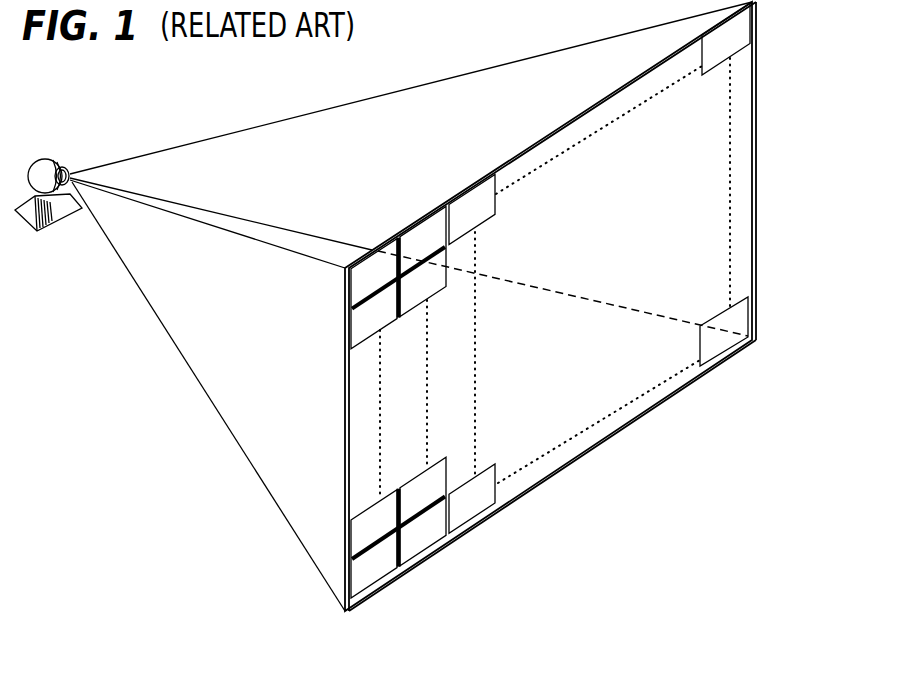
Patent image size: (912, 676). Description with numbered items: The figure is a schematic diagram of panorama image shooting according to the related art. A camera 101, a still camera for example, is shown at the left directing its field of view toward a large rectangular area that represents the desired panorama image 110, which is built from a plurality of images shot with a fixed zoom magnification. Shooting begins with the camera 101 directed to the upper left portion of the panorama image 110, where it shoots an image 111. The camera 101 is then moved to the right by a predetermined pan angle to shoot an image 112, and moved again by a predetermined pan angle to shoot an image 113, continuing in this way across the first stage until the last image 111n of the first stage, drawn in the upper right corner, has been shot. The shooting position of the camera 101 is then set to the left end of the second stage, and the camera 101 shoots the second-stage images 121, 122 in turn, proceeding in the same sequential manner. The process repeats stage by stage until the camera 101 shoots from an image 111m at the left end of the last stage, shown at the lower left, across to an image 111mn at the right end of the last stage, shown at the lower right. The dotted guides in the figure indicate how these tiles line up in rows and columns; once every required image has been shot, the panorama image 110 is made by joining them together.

The camera 101 is at (41, 157).
The panorama image 110 is at (580, 452).
The image 111 is at (370, 270).
The image 112 is at (425, 232).
The image 113 is at (472, 205).
The horizontal boundary line 121 is at (358, 330).
The image 122 is at (412, 302).
The image 111m is at (373, 568).
The image 111n is at (740, 25).
The image 111mn is at (723, 342).